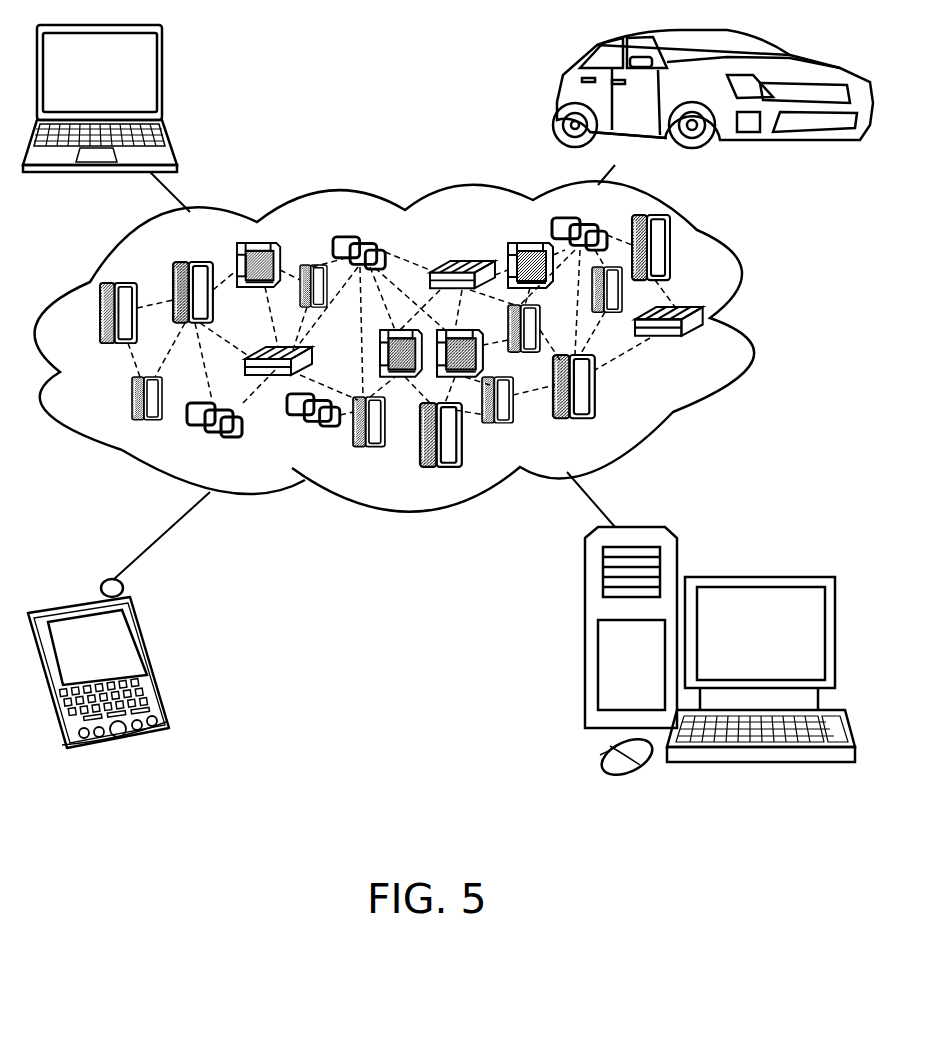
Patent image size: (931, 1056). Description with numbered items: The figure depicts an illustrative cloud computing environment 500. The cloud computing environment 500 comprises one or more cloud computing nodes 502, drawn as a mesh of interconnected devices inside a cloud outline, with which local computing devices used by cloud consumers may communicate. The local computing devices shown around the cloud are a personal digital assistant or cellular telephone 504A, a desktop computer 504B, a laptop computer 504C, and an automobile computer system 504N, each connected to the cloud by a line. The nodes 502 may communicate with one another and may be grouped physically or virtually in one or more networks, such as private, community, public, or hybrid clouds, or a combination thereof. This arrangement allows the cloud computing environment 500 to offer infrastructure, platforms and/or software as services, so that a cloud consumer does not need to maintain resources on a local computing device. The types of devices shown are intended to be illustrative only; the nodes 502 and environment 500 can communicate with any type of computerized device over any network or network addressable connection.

The cloud computing environment 500 is at (737, 302).
The cloud computing nodes 502 is at (710, 351).
The personal digital assistant (PDA) or cellular telephone 504A is at (143, 627).
The desktop computer 504B is at (748, 577).
The laptop computer 504C is at (162, 52).
The automobile computer system 504N is at (560, 90).